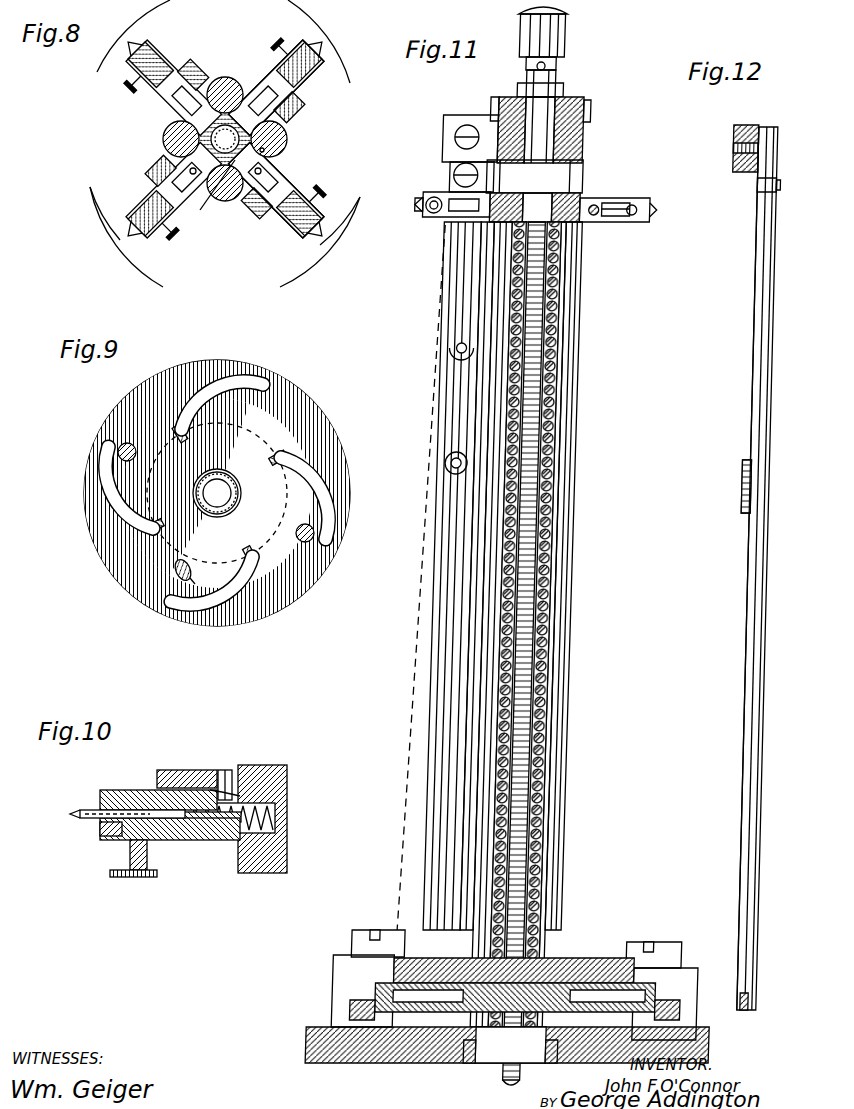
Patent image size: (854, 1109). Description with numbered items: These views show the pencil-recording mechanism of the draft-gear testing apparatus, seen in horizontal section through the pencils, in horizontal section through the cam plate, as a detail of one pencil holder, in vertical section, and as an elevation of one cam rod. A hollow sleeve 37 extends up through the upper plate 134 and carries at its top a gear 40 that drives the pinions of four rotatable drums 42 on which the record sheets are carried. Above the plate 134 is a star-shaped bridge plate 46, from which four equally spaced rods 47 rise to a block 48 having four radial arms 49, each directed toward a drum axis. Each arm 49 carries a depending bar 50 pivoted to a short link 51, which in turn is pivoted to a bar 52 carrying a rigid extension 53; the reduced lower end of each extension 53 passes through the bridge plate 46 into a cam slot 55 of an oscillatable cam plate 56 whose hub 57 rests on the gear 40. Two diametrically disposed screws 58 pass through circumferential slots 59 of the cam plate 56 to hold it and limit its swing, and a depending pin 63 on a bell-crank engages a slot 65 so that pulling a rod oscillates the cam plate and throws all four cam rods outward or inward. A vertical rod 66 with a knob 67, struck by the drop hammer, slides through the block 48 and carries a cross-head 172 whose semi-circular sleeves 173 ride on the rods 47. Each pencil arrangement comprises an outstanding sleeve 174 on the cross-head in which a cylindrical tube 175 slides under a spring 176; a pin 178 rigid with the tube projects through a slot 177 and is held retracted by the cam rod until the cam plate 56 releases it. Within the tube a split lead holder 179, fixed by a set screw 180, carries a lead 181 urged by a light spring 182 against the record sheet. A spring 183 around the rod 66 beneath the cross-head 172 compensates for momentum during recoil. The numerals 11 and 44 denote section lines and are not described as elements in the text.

In FIG. 8, the clamp arm 11 is at (318, 64).
In FIG. 11, the hollow sleeve 37 is at (500, 1062).
In FIG. 11, the gear 40 is at (405, 1004).
In FIG. 8, the rotatable drums 42 is at (118, 52).
In FIG. 8, the rim 44 is at (102, 205).
In FIG. 11, the bridge plate 46 is at (400, 965).
In FIG. 8, the rods 47 is at (228, 78).
In FIG. 11, the rods 47 is at (590, 670).
In FIG. 11, the block 48 is at (592, 135).
In FIG. 11, the radial arms 49 is at (447, 128).
In FIG. 12, the radial arms 49 is at (747, 137).
In FIG. 8, the depending bar 50 is at (302, 86).
In FIG. 10, the depending bar 50 is at (172, 768).
In FIG. 11, the depending bar 50 is at (452, 290).
In FIG. 12, the depending bar 50 is at (770, 300).
In FIG. 11, the short link 51 is at (489, 400).
In FIG. 12, the short link 51 is at (770, 416).
In FIG. 8, the bar 52 is at (195, 68).
In FIG. 12, the bar 52 is at (760, 459).
In FIG. 9, the extension 53 is at (270, 458).
In FIG. 11, the extension 53 is at (452, 750).
In FIG. 12, the extension 53 is at (764, 684).
In FIG. 9, the cam slot 55 is at (260, 378).
In FIG. 9, the cam plate 56 is at (125, 404).
In FIG. 12, the cam plate 56 is at (770, 1012).
In FIG. 11, the hub 57 is at (695, 1022).
In FIG. 9, the screws 58 is at (120, 446).
In FIG. 11, the screws 58 is at (395, 1022).
In FIG. 9, the circumferential slots 59 is at (103, 462).
In FIG. 9, the depending pin 63 is at (177, 563).
In FIG. 9, the slot 65 is at (206, 569).
In FIG. 8, the rod 66 is at (290, 138).
In FIG. 9, the rod 66 is at (217, 493).
In FIG. 11, the rod 66 is at (560, 62).
In FIG. 11, the knob 67 is at (566, 12).
In FIG. 11, the upper plate 134 is at (345, 1034).
In FIG. 8, the cross-head 172 is at (268, 158).
In FIG. 10, the cross-head 172 is at (265, 770).
In FIG. 11, the cross-head 172 is at (585, 224).
In FIG. 8, the semi-circular sleeves 173 is at (190, 118).
In FIG. 11, the semi-circular sleeves 173 is at (590, 172).
In FIG. 8, the outstanding sleeve 174 is at (160, 70).
In FIG. 10, the outstanding sleeve 174 is at (115, 790).
In FIG. 11, the outstanding sleeve 174 is at (640, 223).
In FIG. 10, the cylindrical tube 175 is at (205, 840).
In FIG. 10, the spring 176 is at (278, 823).
In FIG. 10, the slot 177 is at (165, 792).
In FIG. 11, the slot 177 is at (614, 216).
In FIG. 8, the pin 178 is at (178, 160).
In FIG. 10, the pin 178 is at (225, 768).
In FIG. 11, the pin 178 is at (602, 206).
In FIG. 10, the split lead holder 179 is at (102, 830).
In FIG. 11, the split lead holder 179 is at (423, 203).
In FIG. 8, the set screw 180 is at (284, 47).
In FIG. 10, the set screw 180 is at (130, 876).
In FIG. 11, the set screw 180 is at (438, 214).
In FIG. 8, the lead 181 is at (145, 50).
In FIG. 10, the lead 181 is at (76, 816).
In FIG. 11, the lead 181 is at (423, 206).
In FIG. 8, the light spring 182 is at (210, 205).
In FIG. 10, the light spring 182 is at (232, 845).
In FIG. 9, the spring 183 is at (238, 496).
In FIG. 11, the spring 183 is at (570, 570).